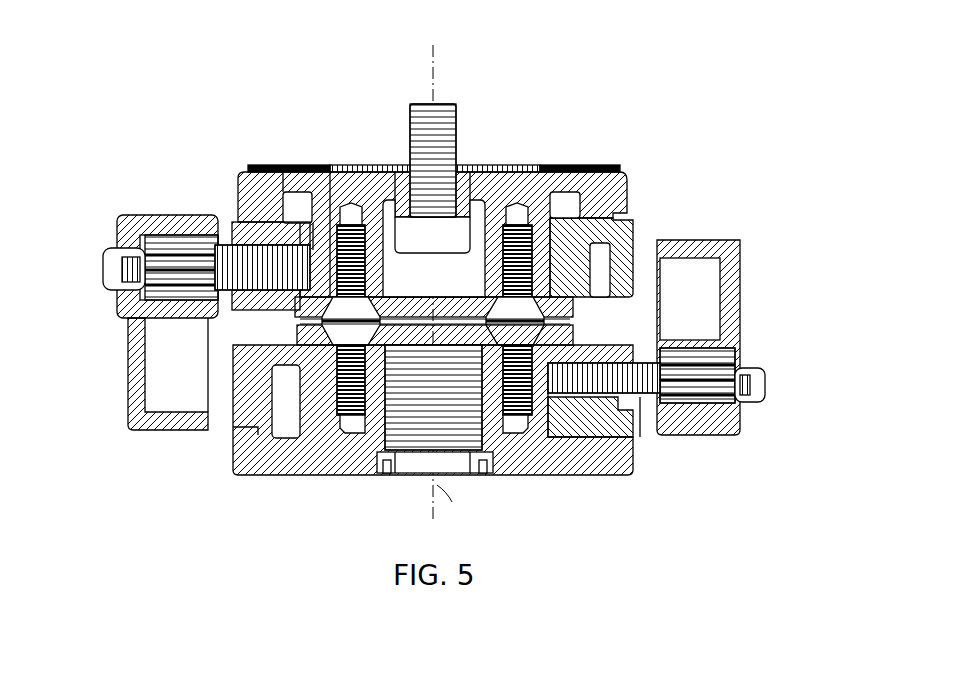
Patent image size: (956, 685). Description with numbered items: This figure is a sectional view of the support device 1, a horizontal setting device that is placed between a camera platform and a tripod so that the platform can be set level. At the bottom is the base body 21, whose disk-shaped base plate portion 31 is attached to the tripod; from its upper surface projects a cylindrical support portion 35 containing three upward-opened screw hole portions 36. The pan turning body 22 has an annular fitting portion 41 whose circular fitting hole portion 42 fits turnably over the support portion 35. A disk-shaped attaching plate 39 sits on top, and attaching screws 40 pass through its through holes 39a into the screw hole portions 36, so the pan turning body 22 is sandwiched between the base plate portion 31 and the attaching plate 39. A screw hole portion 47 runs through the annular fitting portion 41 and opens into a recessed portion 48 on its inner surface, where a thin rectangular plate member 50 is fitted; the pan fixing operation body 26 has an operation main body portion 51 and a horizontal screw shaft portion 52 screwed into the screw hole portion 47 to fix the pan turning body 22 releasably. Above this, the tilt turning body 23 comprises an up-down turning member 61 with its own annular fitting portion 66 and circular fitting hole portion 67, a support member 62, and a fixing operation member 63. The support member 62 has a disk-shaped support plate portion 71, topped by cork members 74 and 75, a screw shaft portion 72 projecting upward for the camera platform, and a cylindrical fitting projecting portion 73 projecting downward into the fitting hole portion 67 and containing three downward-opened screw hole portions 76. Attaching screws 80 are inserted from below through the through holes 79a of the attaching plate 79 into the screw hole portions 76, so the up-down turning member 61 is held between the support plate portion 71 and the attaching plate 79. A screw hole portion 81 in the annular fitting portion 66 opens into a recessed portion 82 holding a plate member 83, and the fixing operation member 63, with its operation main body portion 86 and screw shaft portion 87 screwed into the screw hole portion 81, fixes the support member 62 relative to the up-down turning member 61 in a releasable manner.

The support device 1 is at (434, 287).
The base body 21 is at (445, 437).
The pan turning body 22 is at (202, 305).
The tilt turning body 23 is at (435, 200).
The pan fixing operation body 26 is at (661, 335).
The base plate portion 31 is at (282, 478).
The support portion 35 is at (320, 405).
The screw hole portions 36 is at (512, 430).
The attaching plate 39 is at (572, 305).
The through holes 39a is at (574, 328).
The attaching screws 40 is at (520, 436).
The annular fitting portion 41 is at (633, 430).
The fitting hole portion 42 is at (560, 407).
The screw hole portion 47 is at (643, 408).
The recessed portion 48 is at (570, 410).
The plate member 50 is at (585, 355).
The operation main body portion 51 is at (742, 270).
The screw shaft portion 52 is at (700, 382).
The up-down turning member 61 is at (630, 226).
The support member 62 is at (247, 192).
The fixing operation member 63 is at (170, 212).
The annular fitting portion 66 is at (548, 198).
The fitting hole portion 67 is at (563, 228).
The support plate portion 71 is at (612, 192).
The screw shaft portion 72 is at (445, 128).
The fitting projecting portion 73 is at (327, 225).
The cork member 74 is at (289, 168).
The cork member 75 is at (466, 168).
The screw hole portions 76 is at (512, 212).
The attaching plate 79 is at (293, 305).
The through holes 79a is at (305, 326).
The attaching screws 80 is at (530, 255).
The screw hole portion 81 is at (230, 296).
The recessed portion 82 is at (278, 235).
The plate member 83 is at (313, 198).
The operation main body portion 86 is at (127, 366).
The screw shaft portion 87 is at (250, 262).